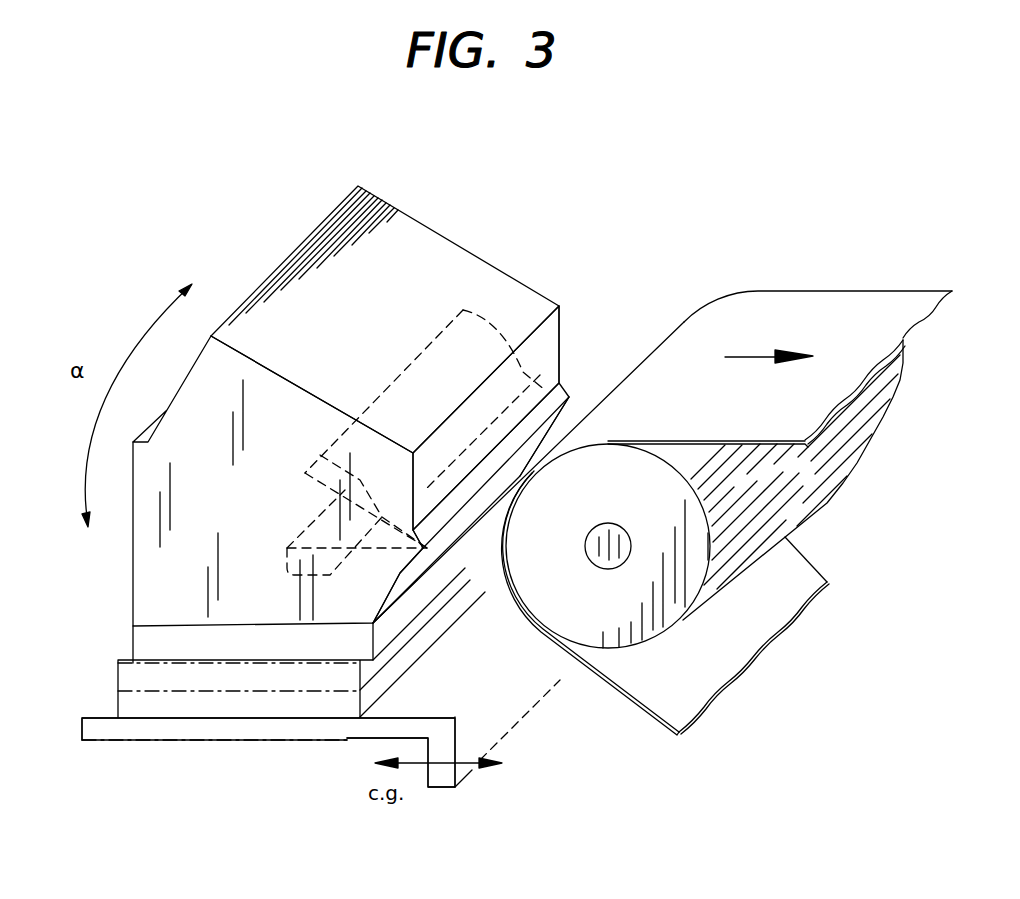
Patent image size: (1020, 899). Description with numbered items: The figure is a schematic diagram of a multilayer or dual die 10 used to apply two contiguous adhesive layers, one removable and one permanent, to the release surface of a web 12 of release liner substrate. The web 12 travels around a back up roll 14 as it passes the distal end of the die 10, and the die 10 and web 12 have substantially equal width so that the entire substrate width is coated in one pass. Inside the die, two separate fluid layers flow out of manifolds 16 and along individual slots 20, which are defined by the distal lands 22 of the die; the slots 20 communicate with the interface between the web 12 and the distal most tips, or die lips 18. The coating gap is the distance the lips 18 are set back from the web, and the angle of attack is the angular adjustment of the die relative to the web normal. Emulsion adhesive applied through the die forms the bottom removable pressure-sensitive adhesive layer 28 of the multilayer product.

The multilayer die 10 is at (440, 230).
The web 12 is at (817, 291).
The back up roll 14 is at (648, 643).
The manifolds 16 is at (330, 573).
The die lips 18 is at (457, 518).
The slots 20 is at (405, 523).
The distal lands 22 is at (540, 378).
The bottom removable pressure-sensitive adhesive layer 28 is at (443, 763).